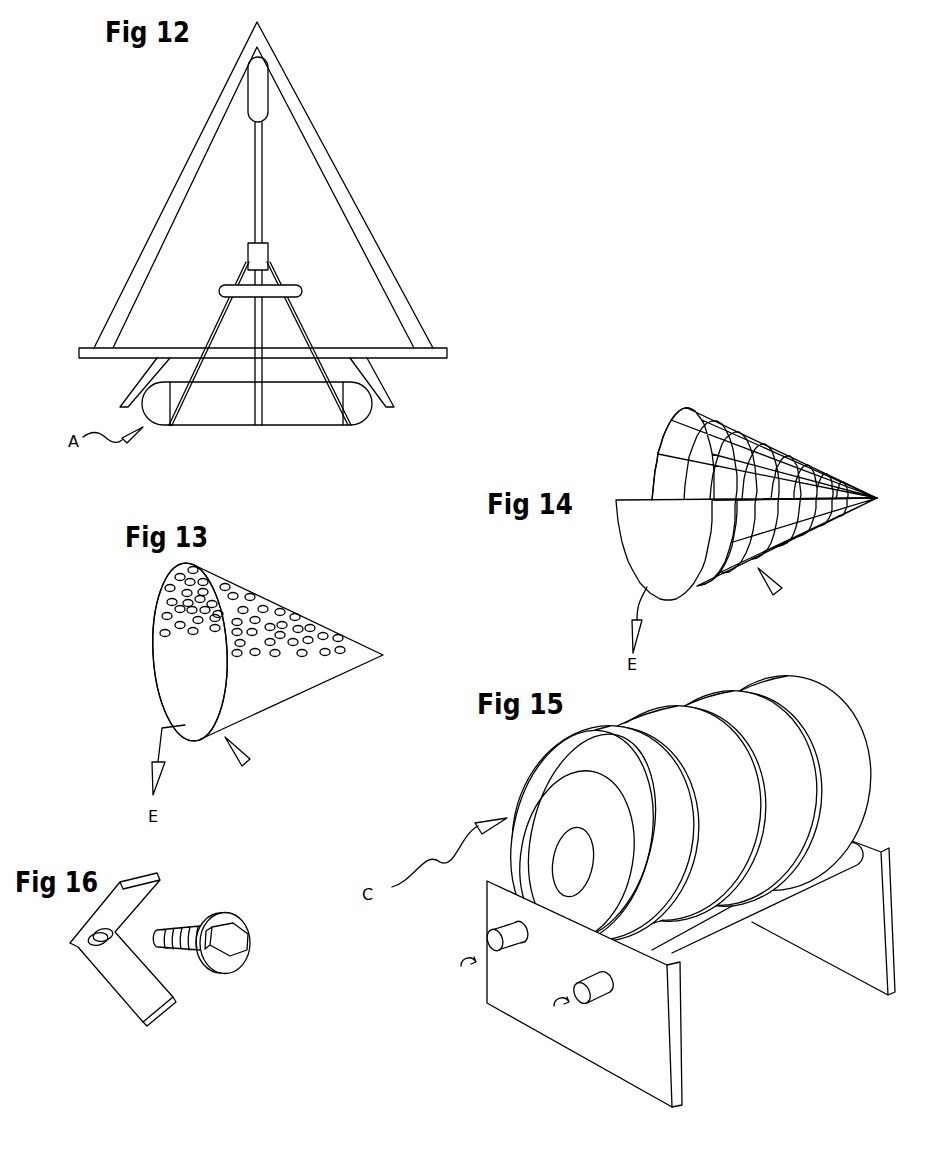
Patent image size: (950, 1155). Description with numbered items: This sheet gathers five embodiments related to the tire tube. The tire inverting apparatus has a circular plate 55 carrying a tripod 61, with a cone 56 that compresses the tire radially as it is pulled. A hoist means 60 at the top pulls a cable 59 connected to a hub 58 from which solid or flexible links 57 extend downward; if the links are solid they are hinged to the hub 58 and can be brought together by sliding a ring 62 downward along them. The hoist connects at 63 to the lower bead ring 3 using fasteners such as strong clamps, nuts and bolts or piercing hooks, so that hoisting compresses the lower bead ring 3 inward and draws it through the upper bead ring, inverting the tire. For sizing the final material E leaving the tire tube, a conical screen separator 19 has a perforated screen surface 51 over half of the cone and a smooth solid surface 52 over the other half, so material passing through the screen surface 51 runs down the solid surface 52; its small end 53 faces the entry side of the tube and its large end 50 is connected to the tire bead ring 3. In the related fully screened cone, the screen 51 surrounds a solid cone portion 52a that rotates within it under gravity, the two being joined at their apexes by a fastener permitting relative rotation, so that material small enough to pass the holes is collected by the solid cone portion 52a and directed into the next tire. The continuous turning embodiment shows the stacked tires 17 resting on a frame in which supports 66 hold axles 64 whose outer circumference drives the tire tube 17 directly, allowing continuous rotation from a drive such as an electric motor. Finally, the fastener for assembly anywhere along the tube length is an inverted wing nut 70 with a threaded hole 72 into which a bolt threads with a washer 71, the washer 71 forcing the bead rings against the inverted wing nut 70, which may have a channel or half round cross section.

In FIG. 12, the bead ring 3 is at (323, 427).
In FIG. 12, the circular plate 55 is at (447, 356).
In FIG. 12, the cone 56 is at (377, 383).
In FIG. 12, the links 57 is at (305, 331).
In FIG. 12, the hub 58 is at (271, 248).
In FIG. 12, the cable 59 is at (263, 185).
In FIG. 12, the hoist means 60 is at (263, 90).
In FIG. 12, the tripod 61 is at (372, 242).
In FIG. 12, the sliding ring 62 is at (303, 290).
In FIG. 12, the hoist connection 63 is at (172, 423).
In FIG. 13, the large end 50 is at (162, 587).
In FIG. 14, the large end 50 is at (657, 430).
In FIG. 13, the screen surface 51 is at (307, 620).
In FIG. 14, the screen surface 51 is at (800, 467).
In FIG. 13, the smooth solid surface 52 is at (203, 707).
In FIG. 14, the solid cone portion 52a is at (643, 545).
In FIG. 13, the small end 53 is at (383, 657).
In FIG. 14, the small end 53 is at (877, 490).
In FIG. 13, the conical screen separator 19 is at (247, 762).
In FIG. 14, the conical screen separator 19 is at (780, 592).
In FIG. 15, the stacked tires 17 is at (540, 840).
In FIG. 15, the axle 64 is at (595, 996).
In FIG. 15, the supports 66 is at (842, 943).
In FIG. 16, the inverted wing nut 70 is at (137, 897).
In FIG. 16, the washer 71 is at (225, 963).
In FIG. 16, the threaded hole / bolt 72 is at (237, 930).